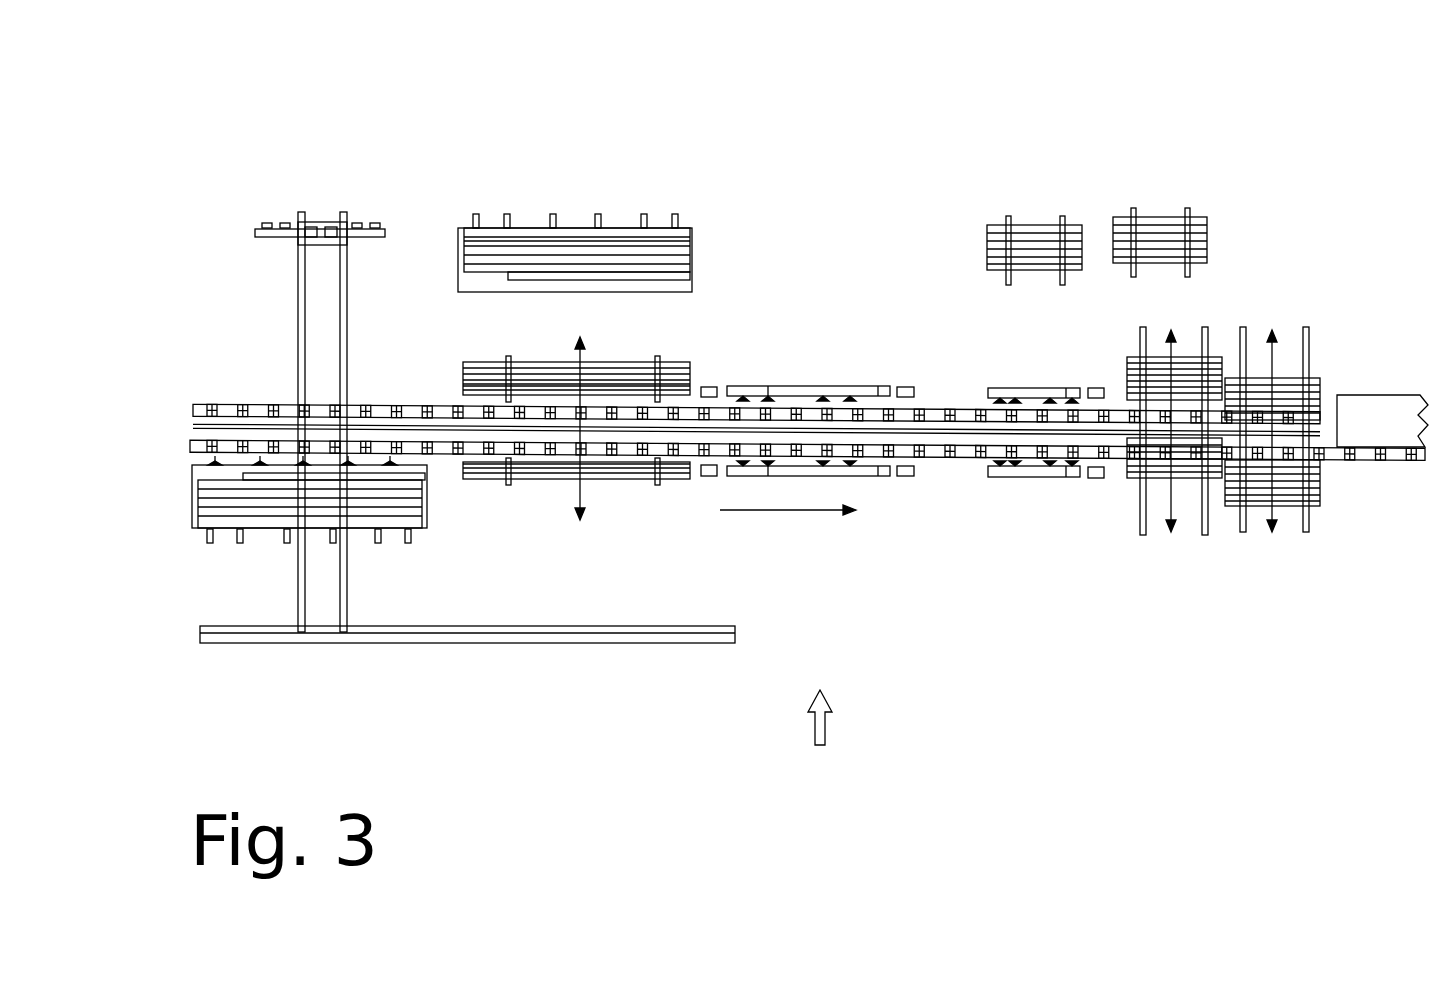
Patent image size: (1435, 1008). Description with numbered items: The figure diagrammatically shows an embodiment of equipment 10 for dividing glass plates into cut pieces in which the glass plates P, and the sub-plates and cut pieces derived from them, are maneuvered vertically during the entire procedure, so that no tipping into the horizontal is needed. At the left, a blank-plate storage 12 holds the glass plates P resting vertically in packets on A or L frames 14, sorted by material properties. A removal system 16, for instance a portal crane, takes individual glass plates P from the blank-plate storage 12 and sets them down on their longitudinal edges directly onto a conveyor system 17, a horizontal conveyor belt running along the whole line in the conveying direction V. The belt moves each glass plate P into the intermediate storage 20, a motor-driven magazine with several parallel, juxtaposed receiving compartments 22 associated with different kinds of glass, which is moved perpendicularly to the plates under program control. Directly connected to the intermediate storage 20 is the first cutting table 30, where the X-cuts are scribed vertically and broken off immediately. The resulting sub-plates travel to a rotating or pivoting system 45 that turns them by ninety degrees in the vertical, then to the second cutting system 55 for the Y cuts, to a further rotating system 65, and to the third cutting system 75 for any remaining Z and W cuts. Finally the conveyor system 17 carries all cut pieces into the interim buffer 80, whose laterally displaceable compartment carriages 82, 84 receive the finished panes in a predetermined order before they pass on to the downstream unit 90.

The equipment 10 is at (824, 739).
The blank-plate storage 12 is at (523, 203).
The A or L frames 14 is at (463, 240).
The removal system 16 is at (317, 458).
The conveyor system 17 is at (228, 420).
The intermediate storage 20 is at (536, 487).
The receiving compartments 22 is at (622, 385).
The glass plates P is at (613, 262).
The cutting table 30 is at (714, 385).
The rotating or pivoting system 45 is at (808, 385).
The second cutting system 55 is at (906, 386).
The further rotating or pivoting system 65 is at (1030, 484).
The third cutting system 75 is at (1095, 487).
The interim buffer 80 is at (1201, 560).
The compartment carriage 82 is at (1243, 520).
The compartment carriage 84 is at (1247, 380).
The downstream device 90 is at (1390, 377).
The conveying direction V is at (792, 512).